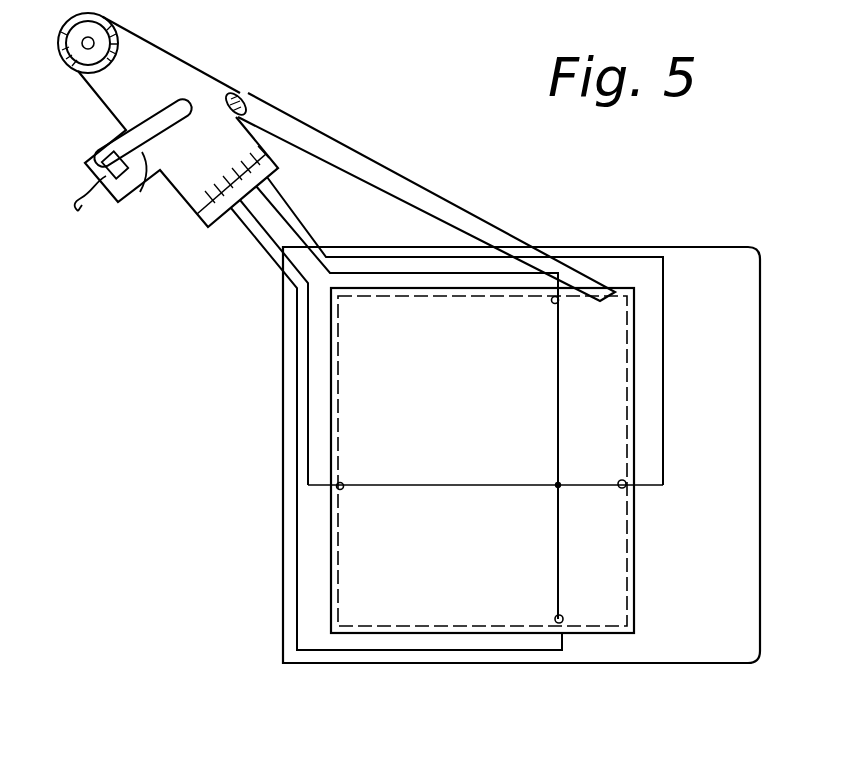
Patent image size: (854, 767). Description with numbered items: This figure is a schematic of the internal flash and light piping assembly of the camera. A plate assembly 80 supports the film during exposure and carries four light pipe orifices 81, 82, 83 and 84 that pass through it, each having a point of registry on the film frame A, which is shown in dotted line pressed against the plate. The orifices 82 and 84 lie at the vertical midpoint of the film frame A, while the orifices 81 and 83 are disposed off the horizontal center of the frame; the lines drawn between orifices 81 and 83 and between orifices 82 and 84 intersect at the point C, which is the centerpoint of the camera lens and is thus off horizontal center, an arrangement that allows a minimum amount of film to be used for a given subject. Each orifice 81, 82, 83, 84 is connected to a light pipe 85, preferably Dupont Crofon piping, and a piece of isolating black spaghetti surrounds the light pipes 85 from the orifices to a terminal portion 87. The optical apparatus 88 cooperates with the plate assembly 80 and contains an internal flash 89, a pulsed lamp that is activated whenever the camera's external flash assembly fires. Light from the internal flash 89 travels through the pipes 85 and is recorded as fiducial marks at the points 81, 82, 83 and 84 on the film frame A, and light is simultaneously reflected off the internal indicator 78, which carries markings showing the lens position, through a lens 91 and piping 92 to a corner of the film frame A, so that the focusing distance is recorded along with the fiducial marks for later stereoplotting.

The internal indicator 78 is at (94, 32).
The plate assembly 80 is at (700, 247).
The light pipe orifice 81 is at (558, 303).
The light pipe orifice 82 is at (626, 486).
The light pipe orifice 83 is at (561, 623).
The light pipe orifice 84 is at (343, 483).
The light pipe 85 is at (296, 213).
The terminal portion 87 is at (207, 205).
The optical apparatus 88 is at (212, 68).
The internal flash 89 is at (111, 190).
The lens 91 is at (246, 101).
The piping 92 is at (413, 182).
The film frame A is at (493, 288).
The centerpoint C is at (485, 468).